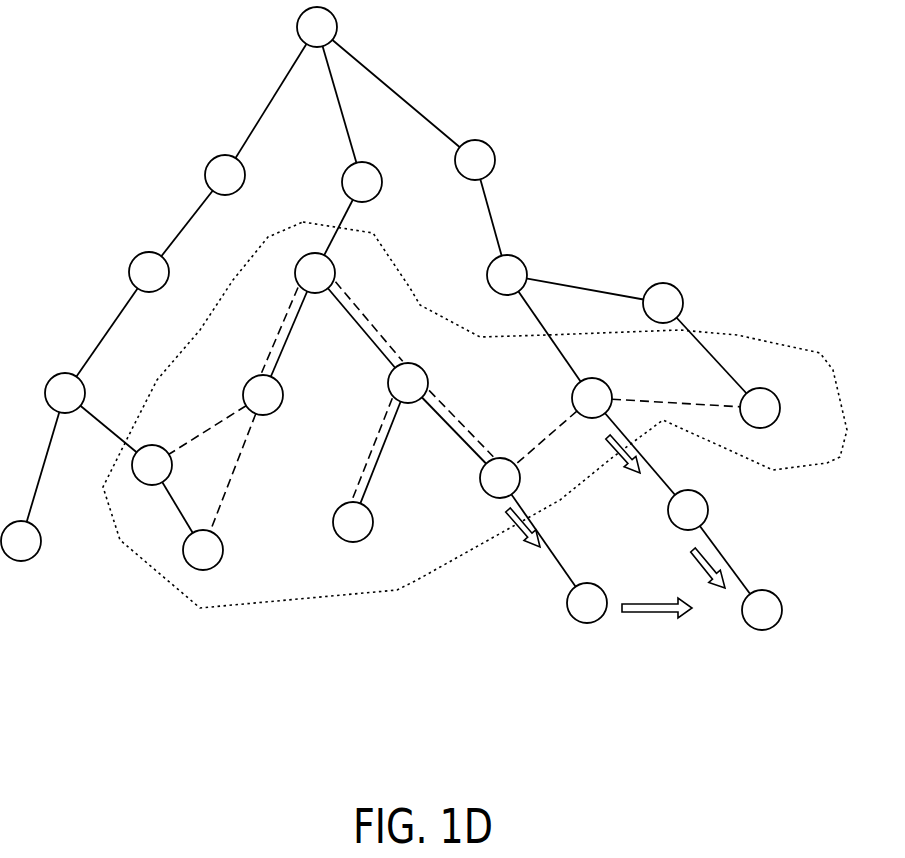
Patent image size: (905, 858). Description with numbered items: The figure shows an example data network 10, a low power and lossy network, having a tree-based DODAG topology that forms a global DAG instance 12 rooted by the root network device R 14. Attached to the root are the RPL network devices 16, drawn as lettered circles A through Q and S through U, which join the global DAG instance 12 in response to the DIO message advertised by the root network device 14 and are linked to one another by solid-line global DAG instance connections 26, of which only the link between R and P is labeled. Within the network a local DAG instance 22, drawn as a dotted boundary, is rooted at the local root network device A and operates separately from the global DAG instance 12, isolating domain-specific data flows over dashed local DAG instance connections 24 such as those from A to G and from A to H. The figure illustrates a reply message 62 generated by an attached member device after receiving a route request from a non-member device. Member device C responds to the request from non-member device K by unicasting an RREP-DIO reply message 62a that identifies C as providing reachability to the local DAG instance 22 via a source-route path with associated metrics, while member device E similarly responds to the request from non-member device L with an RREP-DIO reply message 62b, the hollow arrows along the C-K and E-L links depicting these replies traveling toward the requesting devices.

The data network 10 is at (572, 148).
The global DAG instance 12 is at (148, 188).
The root network device 14 is at (298, 23).
The RPL network device 16 is at (336, 266).
The local DAG instance 22 is at (212, 610).
The local DAG instance connection 24 is at (282, 322).
The global DAG instance connection 26 is at (281, 88).
The reply message 62 is at (452, 642).
The RREP-DIO reply message 62a is at (634, 456).
The RREP-DIO reply message 62b is at (526, 553).